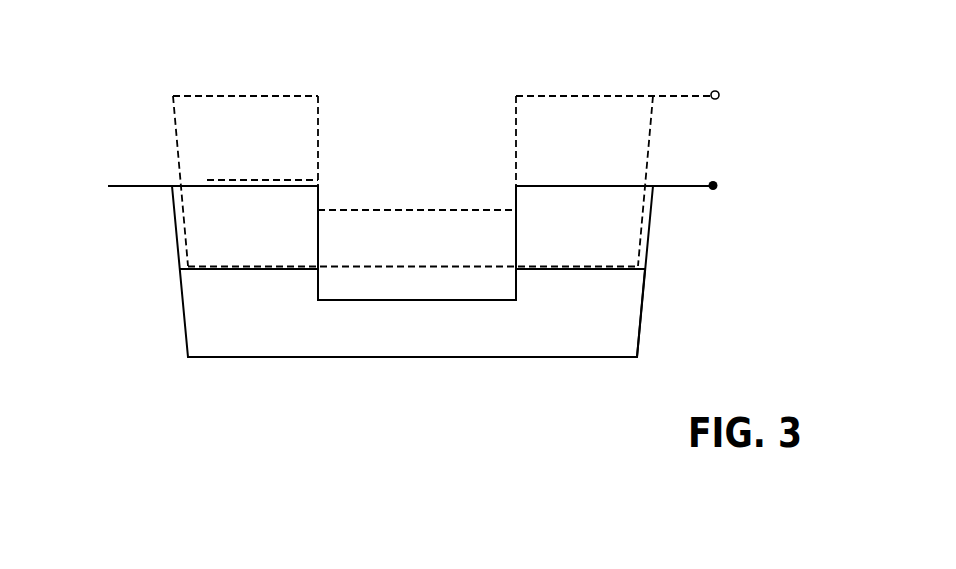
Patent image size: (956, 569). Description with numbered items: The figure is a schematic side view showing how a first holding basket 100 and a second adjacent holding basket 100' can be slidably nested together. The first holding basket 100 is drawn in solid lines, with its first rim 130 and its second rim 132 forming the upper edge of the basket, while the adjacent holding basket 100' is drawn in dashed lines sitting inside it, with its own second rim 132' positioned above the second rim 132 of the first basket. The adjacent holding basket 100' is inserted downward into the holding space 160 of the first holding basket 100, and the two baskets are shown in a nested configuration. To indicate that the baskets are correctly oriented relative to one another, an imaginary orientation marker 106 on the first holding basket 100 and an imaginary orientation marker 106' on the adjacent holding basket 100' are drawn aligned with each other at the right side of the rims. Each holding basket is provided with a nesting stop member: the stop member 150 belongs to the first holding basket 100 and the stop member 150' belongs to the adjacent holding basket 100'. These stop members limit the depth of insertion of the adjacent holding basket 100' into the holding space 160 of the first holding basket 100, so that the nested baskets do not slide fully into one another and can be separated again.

The holding basket 100 is at (401, 277).
The adjacent holding basket 100' is at (442, 136).
The first rim 130 is at (125, 187).
The nesting stop member 150' is at (196, 160).
The nesting stop member 150 is at (365, 282).
The second rim 132' is at (613, 61).
The second rim 132 is at (614, 158).
The imaginary orientation marker 106' is at (746, 56).
The imaginary orientation marker 106 is at (743, 144).
The holding space 160 is at (625, 311).